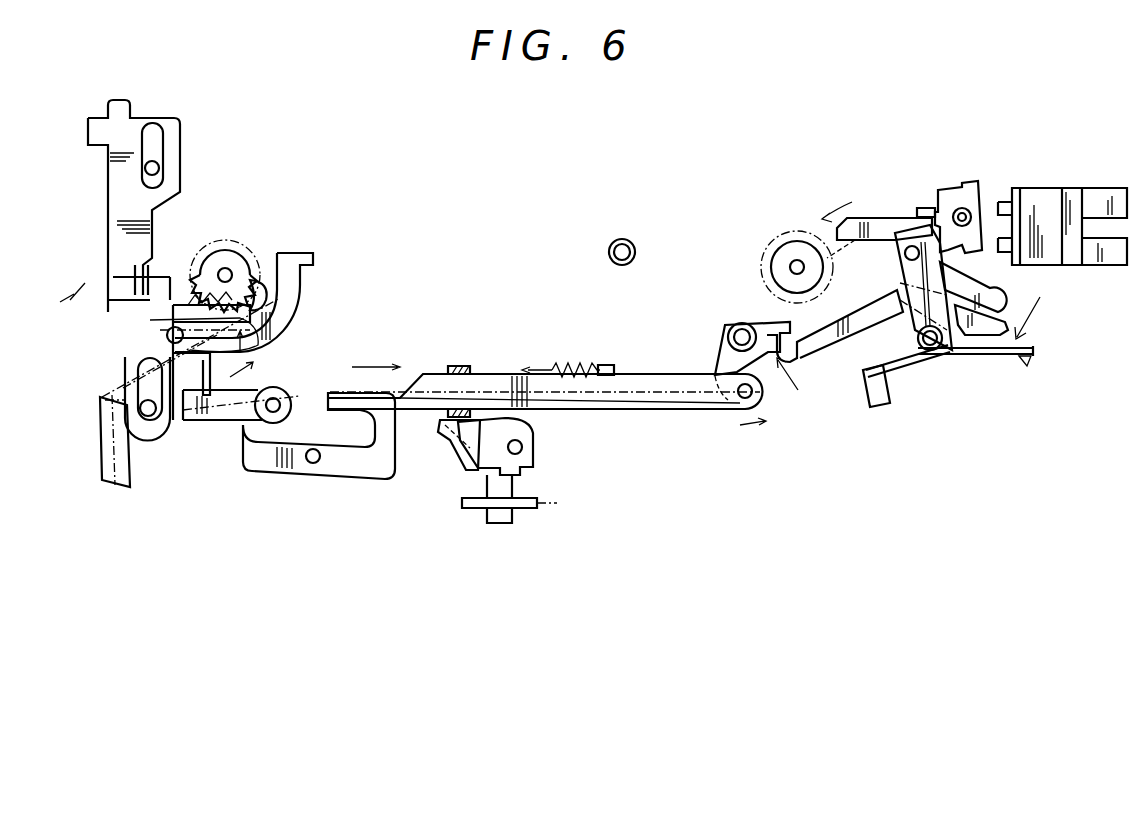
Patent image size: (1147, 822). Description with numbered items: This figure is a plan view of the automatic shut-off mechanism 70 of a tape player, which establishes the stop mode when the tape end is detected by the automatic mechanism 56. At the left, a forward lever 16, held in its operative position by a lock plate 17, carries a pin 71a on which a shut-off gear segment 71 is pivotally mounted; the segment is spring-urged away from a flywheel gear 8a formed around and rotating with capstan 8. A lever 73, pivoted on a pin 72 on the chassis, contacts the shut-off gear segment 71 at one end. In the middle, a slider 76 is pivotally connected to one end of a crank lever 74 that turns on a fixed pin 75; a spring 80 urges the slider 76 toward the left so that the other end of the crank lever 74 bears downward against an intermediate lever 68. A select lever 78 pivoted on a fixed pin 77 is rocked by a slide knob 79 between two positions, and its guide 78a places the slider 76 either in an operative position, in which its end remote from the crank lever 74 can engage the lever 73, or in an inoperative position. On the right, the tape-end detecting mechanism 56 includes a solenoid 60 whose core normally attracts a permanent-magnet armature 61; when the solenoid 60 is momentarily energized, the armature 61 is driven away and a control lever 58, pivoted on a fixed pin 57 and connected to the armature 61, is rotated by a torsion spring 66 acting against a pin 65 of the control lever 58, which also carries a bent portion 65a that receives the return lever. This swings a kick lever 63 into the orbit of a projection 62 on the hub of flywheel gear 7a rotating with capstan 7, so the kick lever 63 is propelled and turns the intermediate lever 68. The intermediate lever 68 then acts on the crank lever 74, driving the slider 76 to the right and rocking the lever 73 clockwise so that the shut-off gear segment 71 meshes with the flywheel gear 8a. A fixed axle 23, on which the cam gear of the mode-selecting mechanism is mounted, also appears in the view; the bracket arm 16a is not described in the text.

The forward lever 16 is at (106, 188).
The lock plate 17 is at (112, 282).
The capstan 8 is at (225, 268).
The flywheel gear 8a is at (258, 290).
The bracket arm 16a is at (315, 258).
The shut-off gear segment 71 is at (268, 336).
The pin 71a is at (128, 366).
The pin 72 is at (314, 464).
The lever 73 is at (252, 472).
The slider 76 is at (668, 404).
The guide 78a is at (462, 366).
The spring 80 is at (568, 365).
The fixed pin 77 is at (526, 448).
The select lever 78 is at (472, 440).
The slide knob 79 is at (472, 510).
The crank lever 74 is at (720, 352).
The fixed pin 75 is at (742, 336).
The intermediate lever 68 is at (836, 358).
The pin 65 is at (902, 372).
The bent portion 65a is at (880, 408).
The fixed pin 57 is at (942, 352).
The torsion spring 66 is at (1008, 355).
The automatic mechanism 56 is at (1048, 318).
The capstan 7 is at (795, 265).
The flywheel gear 7a is at (790, 240).
The kick lever 63 is at (878, 228).
The projection 62 is at (838, 250).
The control lever 58 is at (936, 212).
The armature 61 is at (962, 206).
The solenoid 60 is at (1050, 196).
The fixed axle 23 is at (620, 246).
The automatic shut-off mechanism 70 is at (679, 508).